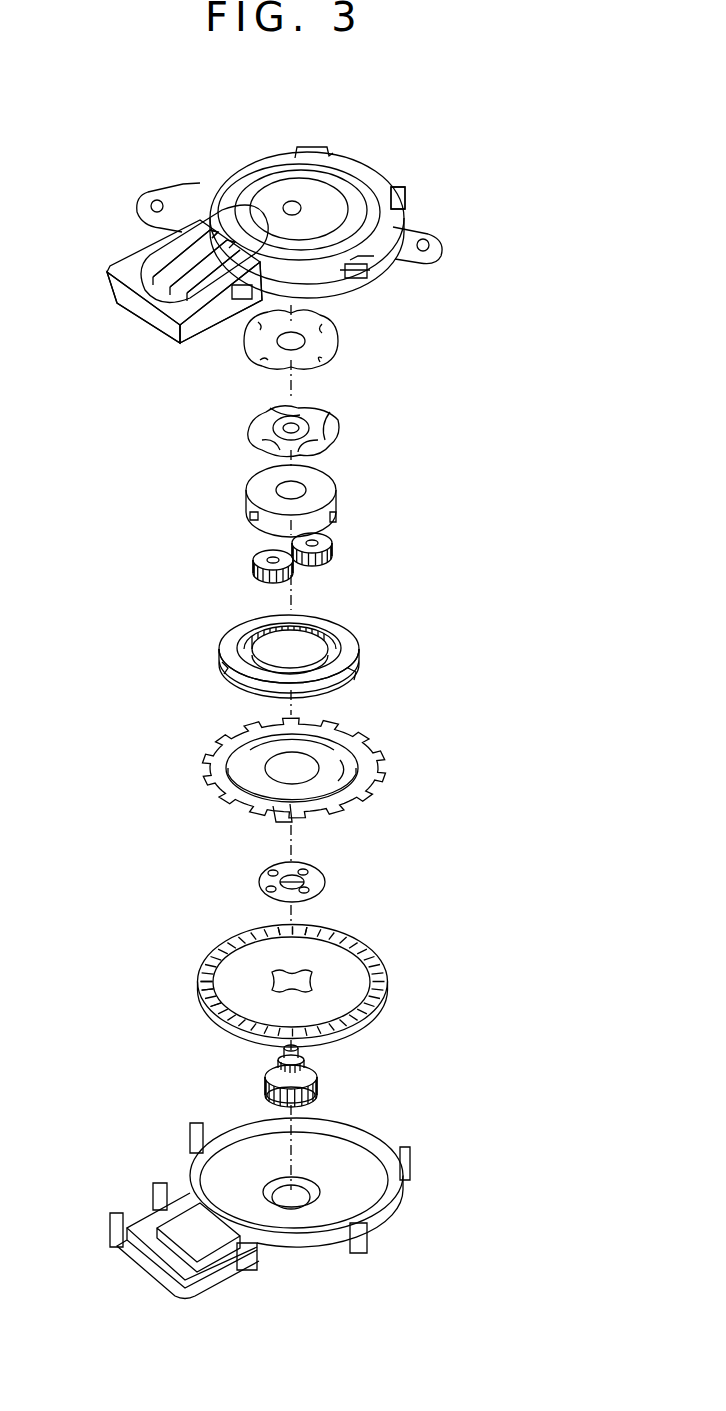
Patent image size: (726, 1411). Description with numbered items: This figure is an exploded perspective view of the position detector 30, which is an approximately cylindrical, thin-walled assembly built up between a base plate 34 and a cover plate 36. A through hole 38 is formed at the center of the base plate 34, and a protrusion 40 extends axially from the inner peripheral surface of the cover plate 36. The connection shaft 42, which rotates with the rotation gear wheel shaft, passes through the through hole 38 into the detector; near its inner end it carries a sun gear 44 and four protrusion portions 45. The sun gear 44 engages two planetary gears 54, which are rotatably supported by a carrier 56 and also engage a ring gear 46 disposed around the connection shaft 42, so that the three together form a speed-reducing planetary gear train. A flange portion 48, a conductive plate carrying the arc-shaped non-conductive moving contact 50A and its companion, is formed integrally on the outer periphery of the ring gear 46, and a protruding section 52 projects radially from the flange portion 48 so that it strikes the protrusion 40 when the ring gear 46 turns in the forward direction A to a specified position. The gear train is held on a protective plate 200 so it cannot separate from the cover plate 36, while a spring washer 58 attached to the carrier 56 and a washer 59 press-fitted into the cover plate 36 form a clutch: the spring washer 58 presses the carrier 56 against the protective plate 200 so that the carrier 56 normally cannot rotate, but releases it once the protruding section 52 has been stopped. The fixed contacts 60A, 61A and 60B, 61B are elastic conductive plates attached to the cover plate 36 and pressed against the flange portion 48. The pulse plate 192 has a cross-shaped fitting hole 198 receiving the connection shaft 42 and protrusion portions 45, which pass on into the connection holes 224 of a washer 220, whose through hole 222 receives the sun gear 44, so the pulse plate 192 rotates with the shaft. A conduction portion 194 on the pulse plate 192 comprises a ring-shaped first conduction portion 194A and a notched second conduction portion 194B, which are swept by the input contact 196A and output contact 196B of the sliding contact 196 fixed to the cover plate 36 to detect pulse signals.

The position detector 30 is at (468, 163).
The base plate 34 is at (390, 1230).
The cover plate 36 is at (372, 165).
The through hole 38 is at (298, 1207).
The protrusion 40 is at (380, 206).
The connection shaft 42 is at (318, 1080).
The sun gear 44 is at (280, 1054).
The protrusion portions 45 is at (308, 1064).
The ring gear 46 is at (342, 646).
The flange portion 48 is at (350, 668).
The moving contact 50A is at (240, 680).
The protruding section 52 is at (357, 625).
The planetary gears 54 is at (332, 548).
The carrier 56 is at (336, 492).
The spring washer 58 is at (338, 428).
The washer 59 is at (338, 338).
The fixed contact 60A is at (237, 222).
The fixed contact 60B is at (233, 217).
The fixed contact 61A is at (250, 232).
The fixed contact 61B is at (223, 293).
The pulse plate 192 is at (385, 962).
The conduction portion 194 is at (95, 1030).
The first conduction portion 194A is at (218, 954).
The second conduction portion 194B is at (212, 992).
The sliding contact 196 is at (235, 388).
The input contact 196A is at (167, 333).
The output contact 196B is at (218, 303).
The fitting hole 198 is at (320, 992).
The protective plate 200 is at (383, 762).
The washer 220 is at (325, 878).
The through hole 222 is at (270, 874).
The connection holes 224 is at (262, 886).
The forward direction A is at (243, 607).